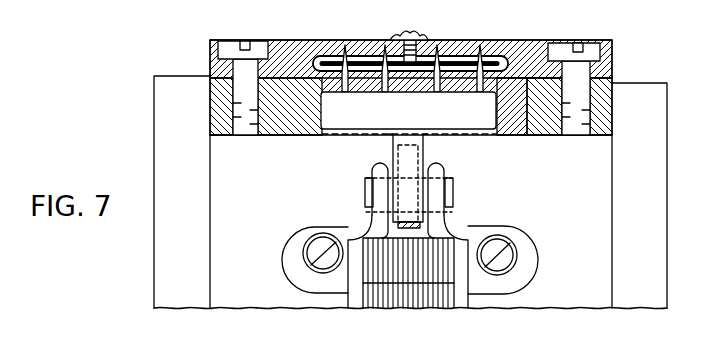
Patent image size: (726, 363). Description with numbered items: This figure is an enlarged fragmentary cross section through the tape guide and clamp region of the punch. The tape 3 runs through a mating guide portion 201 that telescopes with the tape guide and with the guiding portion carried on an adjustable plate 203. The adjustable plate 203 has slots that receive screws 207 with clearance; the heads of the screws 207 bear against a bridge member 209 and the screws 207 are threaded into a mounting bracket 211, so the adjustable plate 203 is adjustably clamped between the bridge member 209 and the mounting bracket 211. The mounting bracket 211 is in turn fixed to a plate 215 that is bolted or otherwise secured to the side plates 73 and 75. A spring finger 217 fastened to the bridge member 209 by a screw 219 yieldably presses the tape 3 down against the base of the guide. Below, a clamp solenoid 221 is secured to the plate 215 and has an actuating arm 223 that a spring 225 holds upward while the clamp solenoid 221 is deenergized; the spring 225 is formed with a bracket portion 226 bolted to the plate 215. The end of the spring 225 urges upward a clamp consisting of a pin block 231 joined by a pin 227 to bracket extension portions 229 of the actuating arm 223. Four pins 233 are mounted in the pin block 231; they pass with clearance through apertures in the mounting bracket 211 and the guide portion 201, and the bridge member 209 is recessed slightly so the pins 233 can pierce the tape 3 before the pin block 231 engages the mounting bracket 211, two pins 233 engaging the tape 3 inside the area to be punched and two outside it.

The tape 3 is at (364, 67).
The side plate 73 is at (154, 137).
The side plate 75 is at (667, 140).
The guide portion 201 is at (512, 42).
The adjustable plate 203 is at (211, 96).
The screws 207 is at (243, 30).
The bridge member 209 is at (316, 40).
The mounting bracket 211 is at (289, 136).
The plate 215 is at (262, 282).
The spring finger 217 is at (417, 36).
The screw 219 is at (400, 36).
The clamp solenoid 221 is at (437, 320).
The actuating arm 223 is at (437, 264).
The spring 225 is at (428, 230).
The bracket portion 226 is at (522, 278).
The pin 227 is at (365, 193).
The bracket extension portions 229 is at (378, 164).
The pin block 231 is at (428, 124).
The pins 233 is at (480, 86).